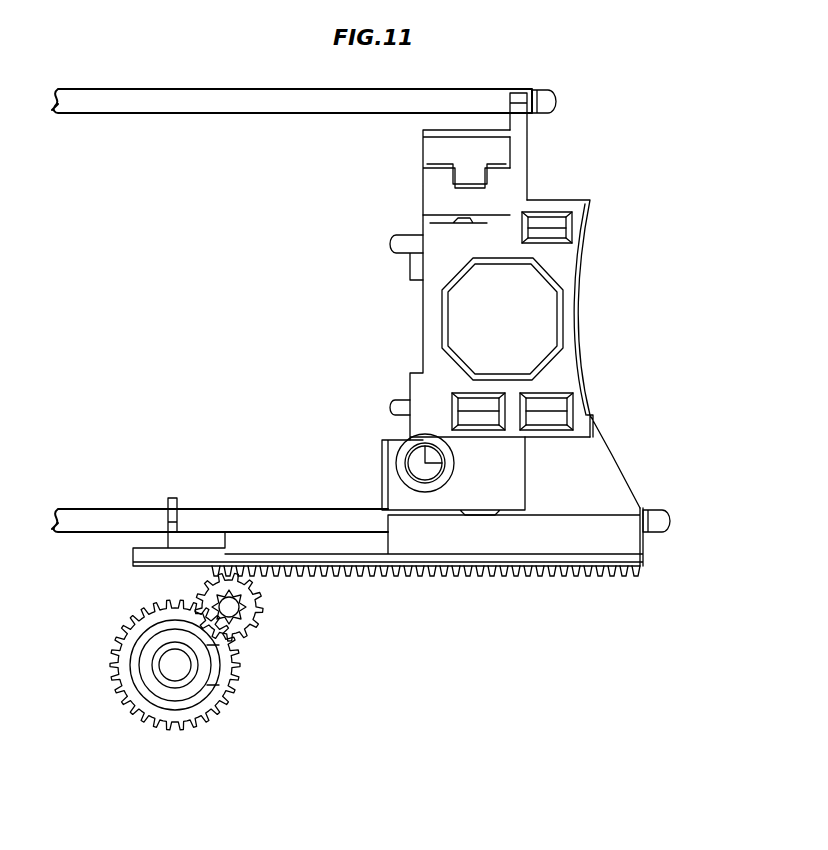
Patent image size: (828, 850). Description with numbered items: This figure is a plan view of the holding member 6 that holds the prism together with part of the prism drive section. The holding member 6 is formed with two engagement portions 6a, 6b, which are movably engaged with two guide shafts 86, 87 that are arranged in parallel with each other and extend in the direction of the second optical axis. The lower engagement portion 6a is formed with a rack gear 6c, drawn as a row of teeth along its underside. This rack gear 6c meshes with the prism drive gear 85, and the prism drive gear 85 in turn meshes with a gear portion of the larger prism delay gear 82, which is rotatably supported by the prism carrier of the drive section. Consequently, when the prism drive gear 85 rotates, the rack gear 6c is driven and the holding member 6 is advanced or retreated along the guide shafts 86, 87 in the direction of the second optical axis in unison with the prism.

The guide shaft 87 is at (557, 94).
The engagement portion 6b is at (518, 137).
The holding member 6 is at (562, 268).
The guide shaft 86 is at (670, 516).
The engagement portion 6a is at (623, 545).
The rack gear 6c is at (467, 579).
The prism drive gear 85 is at (262, 620).
The prism delay gear 82 is at (230, 700).